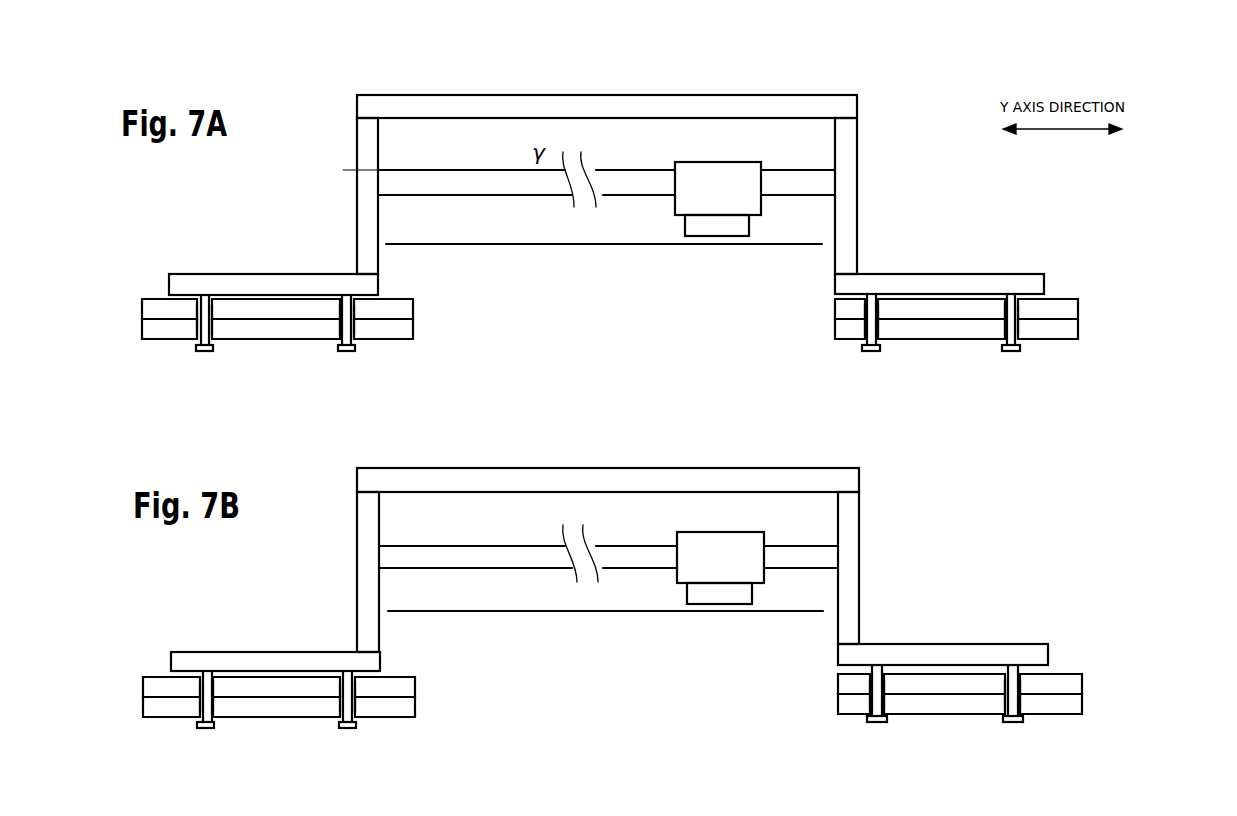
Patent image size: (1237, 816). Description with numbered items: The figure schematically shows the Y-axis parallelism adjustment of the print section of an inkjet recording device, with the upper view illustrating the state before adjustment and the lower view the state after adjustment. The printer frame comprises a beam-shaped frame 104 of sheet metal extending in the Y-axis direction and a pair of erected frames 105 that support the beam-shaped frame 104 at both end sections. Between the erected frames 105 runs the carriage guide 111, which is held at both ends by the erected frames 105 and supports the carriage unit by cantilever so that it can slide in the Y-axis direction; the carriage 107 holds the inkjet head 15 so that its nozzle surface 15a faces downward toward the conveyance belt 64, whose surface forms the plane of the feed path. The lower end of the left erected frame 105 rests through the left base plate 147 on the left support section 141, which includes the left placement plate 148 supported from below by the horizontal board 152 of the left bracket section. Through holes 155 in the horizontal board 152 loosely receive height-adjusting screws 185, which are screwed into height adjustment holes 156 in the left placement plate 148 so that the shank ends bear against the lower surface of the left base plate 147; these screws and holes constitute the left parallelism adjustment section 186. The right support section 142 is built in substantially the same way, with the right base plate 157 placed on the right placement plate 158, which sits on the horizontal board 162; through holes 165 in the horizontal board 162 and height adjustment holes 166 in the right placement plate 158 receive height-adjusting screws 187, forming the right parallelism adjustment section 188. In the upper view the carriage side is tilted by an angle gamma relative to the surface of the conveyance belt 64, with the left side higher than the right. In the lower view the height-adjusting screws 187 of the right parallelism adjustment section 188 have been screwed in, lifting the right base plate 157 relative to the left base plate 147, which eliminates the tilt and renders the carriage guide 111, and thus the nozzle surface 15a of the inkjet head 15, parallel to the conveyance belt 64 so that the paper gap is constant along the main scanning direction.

In FIG. 7A, the beam-shaped frame 104 is at (459, 108).
In FIG. 7B, the beam-shaped frame 104 is at (462, 470).
In FIG. 7A, the erected frame 105 is at (367, 196).
In FIG. 7B, the erected frame 105 is at (368, 509).
In FIG. 7A, the carriage 107 is at (685, 192).
In FIG. 7B, the carriage 107 is at (687, 562).
In FIG. 7A, the inkjet head 15 is at (703, 227).
In FIG. 7B, the inkjet head 15 is at (705, 597).
In FIG. 7A, the nozzle surface 15a is at (730, 238).
In FIG. 7B, the nozzle surface 15a is at (732, 606).
In FIG. 7A, the carriage guide 111 is at (521, 186).
In FIG. 7B, the carriage guide 111 is at (521, 556).
In FIG. 7A, the conveyance belt 64 is at (460, 250).
In FIG. 7B, the conveyance belt 64 is at (465, 615).
In FIG. 7A, the left support section 141 is at (268, 194).
In FIG. 7B, the left support section 141 is at (278, 585).
In FIG. 7A, the right support section 142 is at (965, 194).
In FIG. 7B, the right support section 142 is at (970, 565).
In FIG. 7A, the left base plate 147 is at (178, 284).
In FIG. 7B, the left base plate 147 is at (180, 663).
In FIG. 7A, the left placement plate 148 is at (152, 308).
In FIG. 7B, the left placement plate 148 is at (150, 688).
In FIG. 7A, the horizontal board 152 is at (152, 330).
In FIG. 7B, the horizontal board 152 is at (150, 710).
In FIG. 7A, the through hole 155 is at (212, 328).
In FIG. 7B, the through hole 155 is at (213, 708).
In FIG. 7A, the height adjustment hole 156 is at (211, 300).
In FIG. 7B, the height adjustment hole 156 is at (212, 680).
In FIG. 7A, the right base plate 157 is at (1044, 283).
In FIG. 7B, the right base plate 157 is at (1048, 654).
In FIG. 7A, the right placement plate 158 is at (1065, 309).
In FIG. 7B, the right placement plate 158 is at (1065, 682).
In FIG. 7A, the horizontal board 162 is at (1065, 332).
In FIG. 7B, the horizontal board 162 is at (1070, 703).
In FIG. 7A, the through hole 165 is at (880, 328).
In FIG. 7B, the through hole 165 is at (884, 700).
In FIG. 7A, the height adjustment hole 166 is at (878, 302).
In FIG. 7B, the height adjustment hole 166 is at (880, 675).
In FIG. 7A, the height-adjusting screw 185 is at (360, 405).
In FIG. 7B, the height-adjusting screw 185 is at (360, 781).
In FIG. 7A, the left parallelism adjustment section 186 is at (274, 395).
In FIG. 7B, the left parallelism adjustment section 186 is at (274, 769).
In FIG. 7A, the height-adjusting screw 187 is at (1033, 410).
In FIG. 7B, the height-adjusting screw 187 is at (1033, 780).
In FIG. 7A, the right parallelism adjustment section 188 is at (946, 398).
In FIG. 7B, the right parallelism adjustment section 188 is at (949, 766).